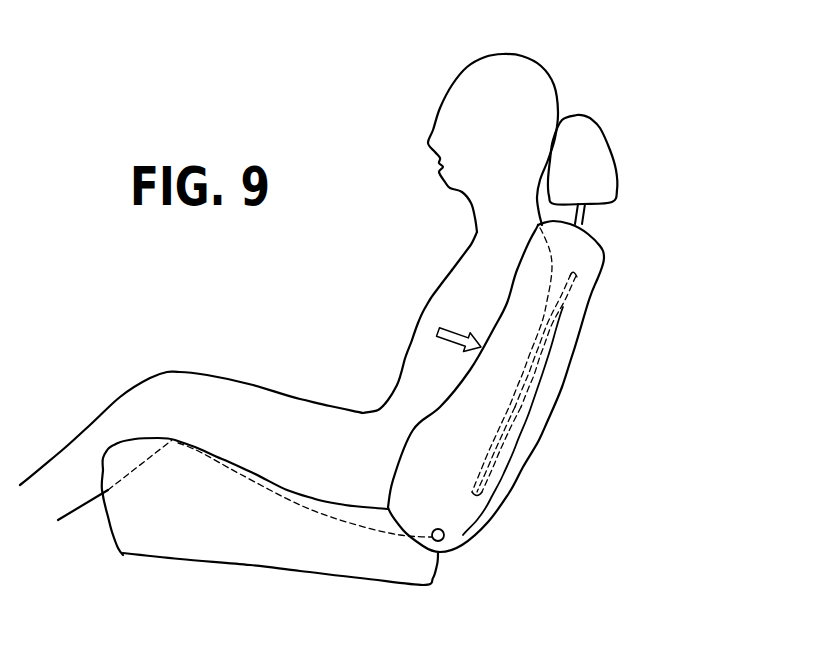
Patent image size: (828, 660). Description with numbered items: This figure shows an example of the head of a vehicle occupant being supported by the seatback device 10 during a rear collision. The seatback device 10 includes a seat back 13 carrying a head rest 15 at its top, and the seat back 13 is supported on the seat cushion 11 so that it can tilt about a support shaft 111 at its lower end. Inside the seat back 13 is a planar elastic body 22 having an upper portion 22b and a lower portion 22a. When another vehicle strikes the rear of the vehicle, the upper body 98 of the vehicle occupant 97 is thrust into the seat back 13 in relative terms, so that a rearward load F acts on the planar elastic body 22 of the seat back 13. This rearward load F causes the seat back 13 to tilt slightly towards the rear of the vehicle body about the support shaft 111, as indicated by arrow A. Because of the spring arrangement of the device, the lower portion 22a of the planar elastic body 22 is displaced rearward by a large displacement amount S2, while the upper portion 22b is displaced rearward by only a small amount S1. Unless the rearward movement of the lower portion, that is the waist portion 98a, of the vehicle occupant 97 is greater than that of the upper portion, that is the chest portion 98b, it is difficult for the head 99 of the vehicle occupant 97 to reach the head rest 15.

The seatback device 10 is at (439, 330).
The seat cushion 11 is at (263, 555).
The seat back 13 is at (575, 290).
The head rest 15 is at (598, 160).
The planar elastic body 22 is at (577, 404).
The lower portion of the planar elastic body 22a is at (487, 455).
The upper portion of the planar elastic body 22b is at (562, 309).
The support shaft 111 is at (443, 548).
The vehicle occupant 97 is at (248, 376).
The upper body 98 is at (417, 347).
The lower portion (waist portion) 98a is at (395, 422).
The upper portion (chest portion) 98b is at (448, 278).
The head 99 is at (532, 77).
The arrow A is at (602, 230).
The rearward load F is at (455, 329).
The small displacement amount S1 is at (541, 322).
The large displacement amount S2 is at (472, 475).